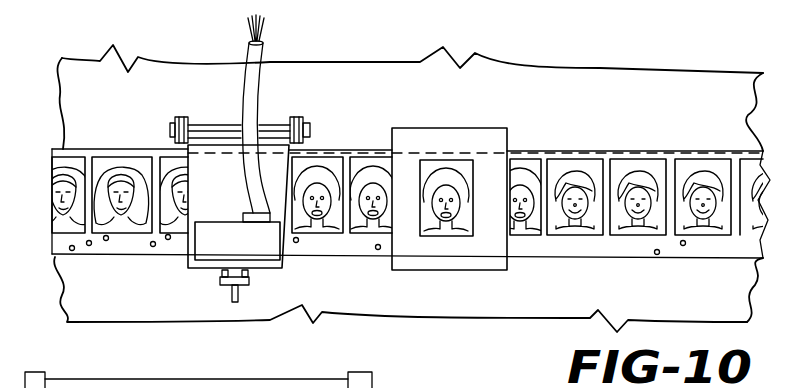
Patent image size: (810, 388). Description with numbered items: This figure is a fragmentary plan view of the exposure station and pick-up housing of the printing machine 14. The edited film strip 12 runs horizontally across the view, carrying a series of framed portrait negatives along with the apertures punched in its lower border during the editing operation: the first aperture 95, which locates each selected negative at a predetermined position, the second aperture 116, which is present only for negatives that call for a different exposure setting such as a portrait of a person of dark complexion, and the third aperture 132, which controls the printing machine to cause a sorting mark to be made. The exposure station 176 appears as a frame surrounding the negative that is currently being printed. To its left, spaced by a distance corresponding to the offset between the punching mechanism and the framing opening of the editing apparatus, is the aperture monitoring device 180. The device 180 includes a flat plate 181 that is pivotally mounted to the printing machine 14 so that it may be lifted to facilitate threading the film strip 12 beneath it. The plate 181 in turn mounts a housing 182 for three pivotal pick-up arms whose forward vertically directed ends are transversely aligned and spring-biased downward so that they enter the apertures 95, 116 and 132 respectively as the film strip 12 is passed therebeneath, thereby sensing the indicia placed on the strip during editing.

The printing machine 14 is at (642, 58).
The film strip 12 is at (706, 140).
The exposure station 176 is at (514, 147).
The flat plate 181 is at (236, 188).
The housing 182 is at (257, 255).
The aperture monitoring device 180 is at (294, 270).
The third aperture 132 is at (72, 251).
The second aperture 116 is at (89, 246).
The first aperture 95 is at (106, 241).